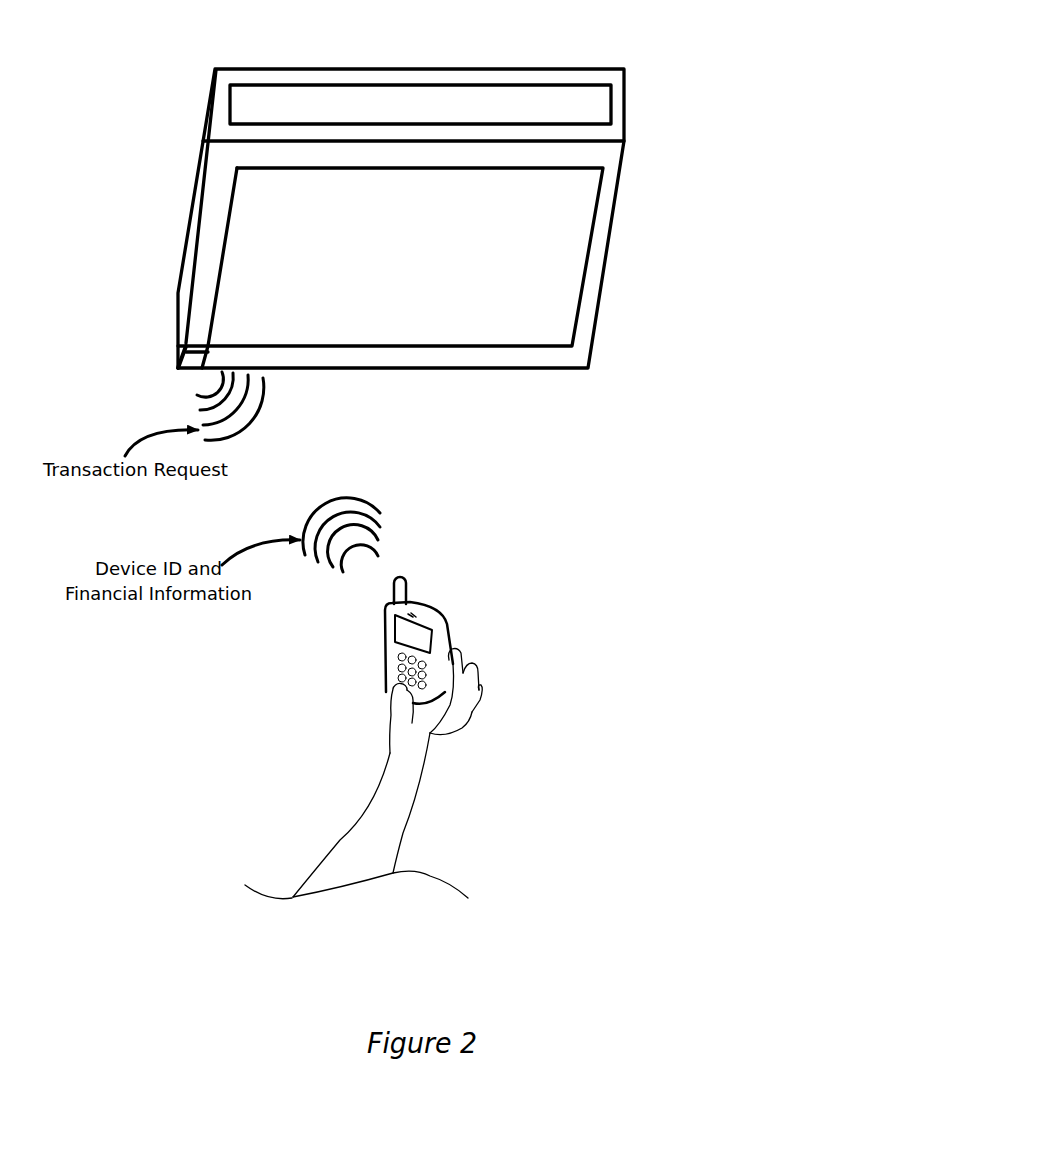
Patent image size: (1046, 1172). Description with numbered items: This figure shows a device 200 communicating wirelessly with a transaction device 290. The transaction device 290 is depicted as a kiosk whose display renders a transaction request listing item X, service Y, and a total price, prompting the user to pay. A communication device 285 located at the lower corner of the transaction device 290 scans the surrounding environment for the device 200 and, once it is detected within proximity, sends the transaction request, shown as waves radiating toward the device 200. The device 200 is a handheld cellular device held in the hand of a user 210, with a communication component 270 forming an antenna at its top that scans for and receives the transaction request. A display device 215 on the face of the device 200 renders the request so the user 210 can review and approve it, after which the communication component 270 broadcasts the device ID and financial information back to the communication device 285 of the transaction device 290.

The transaction device 290 is at (713, 59).
The communication device 285 is at (162, 333).
The device 200 is at (447, 627).
The communication component 270 is at (507, 555).
The display device 215 is at (403, 633).
The user 210 is at (418, 860).